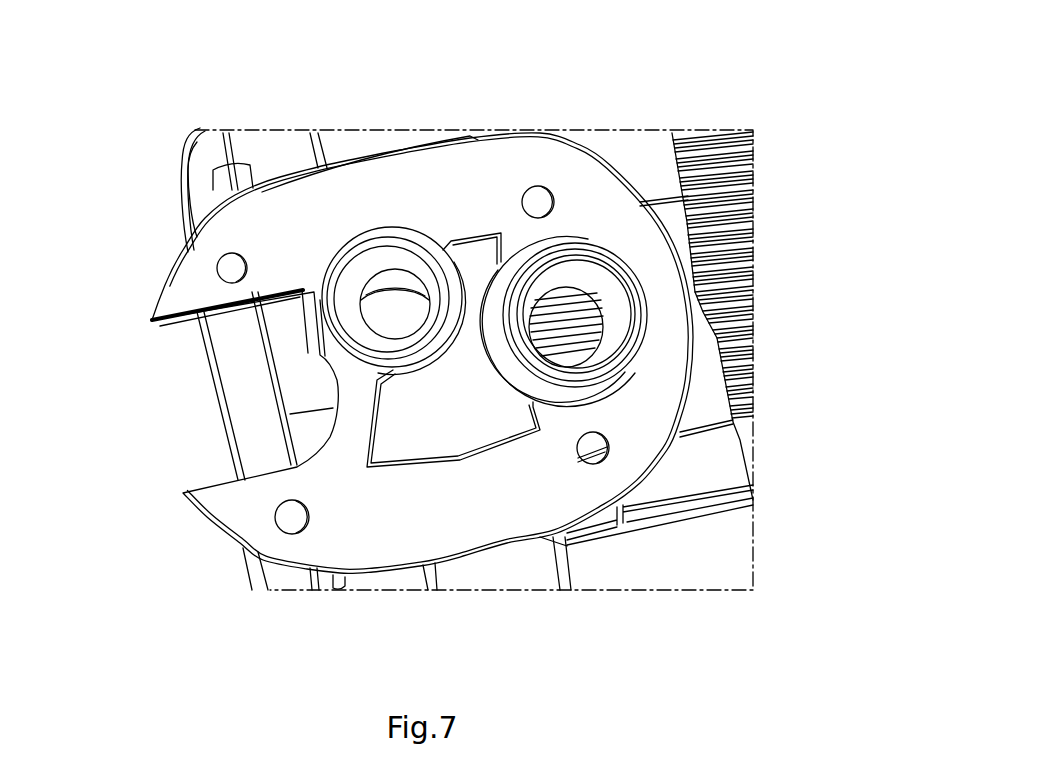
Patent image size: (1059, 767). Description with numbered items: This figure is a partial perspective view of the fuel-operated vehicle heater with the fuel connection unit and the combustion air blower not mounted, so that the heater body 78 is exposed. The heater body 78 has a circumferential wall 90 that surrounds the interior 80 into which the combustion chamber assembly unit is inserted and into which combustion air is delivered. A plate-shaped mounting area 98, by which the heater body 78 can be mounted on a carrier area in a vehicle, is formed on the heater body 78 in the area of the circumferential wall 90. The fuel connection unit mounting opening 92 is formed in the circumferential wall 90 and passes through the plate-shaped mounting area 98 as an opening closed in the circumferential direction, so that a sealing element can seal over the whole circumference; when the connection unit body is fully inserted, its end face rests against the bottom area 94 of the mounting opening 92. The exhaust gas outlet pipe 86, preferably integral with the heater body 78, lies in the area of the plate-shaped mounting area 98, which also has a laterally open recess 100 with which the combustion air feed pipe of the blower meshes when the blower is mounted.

The heater body 78 is at (657, 143).
The interior 80 is at (253, 404).
The exhaust gas outlet pipe 86 is at (622, 263).
The circumferential wall 90 is at (533, 567).
The fuel connection unit mounting opening 92 is at (364, 275).
The bottom area 94 is at (347, 312).
The plate-shaped mounting area 98 is at (458, 165).
The laterally open recess 100 is at (180, 323).